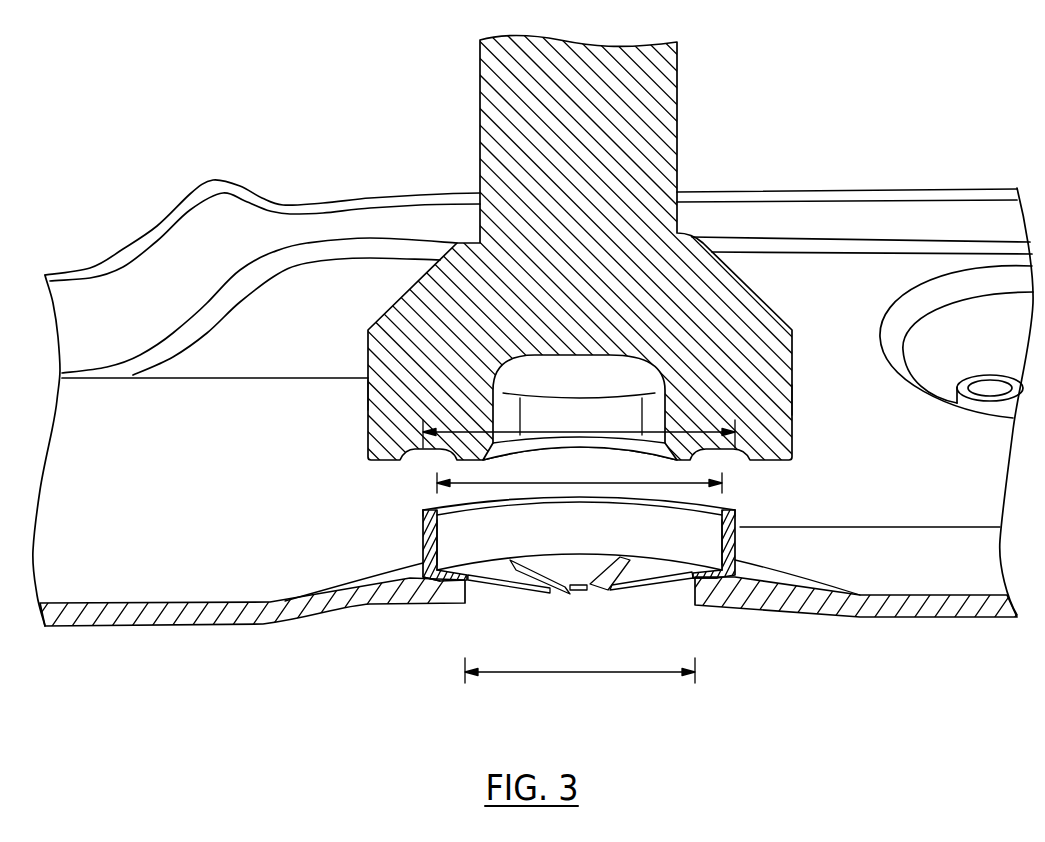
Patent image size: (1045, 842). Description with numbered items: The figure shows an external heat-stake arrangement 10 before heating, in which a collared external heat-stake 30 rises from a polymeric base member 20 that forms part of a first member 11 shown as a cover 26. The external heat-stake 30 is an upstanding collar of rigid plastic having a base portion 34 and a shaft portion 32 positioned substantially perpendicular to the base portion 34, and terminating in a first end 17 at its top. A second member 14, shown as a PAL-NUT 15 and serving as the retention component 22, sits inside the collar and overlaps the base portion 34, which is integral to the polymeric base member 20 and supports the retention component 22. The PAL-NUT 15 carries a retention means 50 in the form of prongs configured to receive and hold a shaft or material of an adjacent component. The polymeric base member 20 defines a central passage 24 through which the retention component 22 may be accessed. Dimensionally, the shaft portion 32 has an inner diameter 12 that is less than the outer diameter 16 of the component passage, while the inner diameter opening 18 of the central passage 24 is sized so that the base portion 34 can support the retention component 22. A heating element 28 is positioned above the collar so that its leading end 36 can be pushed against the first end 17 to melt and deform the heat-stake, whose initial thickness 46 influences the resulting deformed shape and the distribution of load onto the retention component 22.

The external heat-stake arrangement 10 is at (812, 664).
The first member 11 is at (232, 624).
The inner diameter 12 is at (553, 483).
The second member 14 is at (577, 549).
The PAL-NUT 15 is at (577, 549).
The outer diameter 16 is at (580, 432).
The first end of heat-stake collar 17 is at (733, 510).
The inner diameter opening D3 18 is at (578, 672).
The polymeric base member 20 is at (763, 596).
The retention component 22 is at (577, 549).
The polymeric base member central passage 24 is at (690, 581).
The cover 26 is at (190, 591).
The heating element 28 is at (420, 290).
The external heat-stake 30 is at (423, 542).
The shaft portion 32 is at (437, 538).
The base portion 34 is at (423, 600).
The leading end of heating element 36 is at (367, 393).
The initial thickness 46 is at (428, 506).
The retention means 50 is at (647, 568).